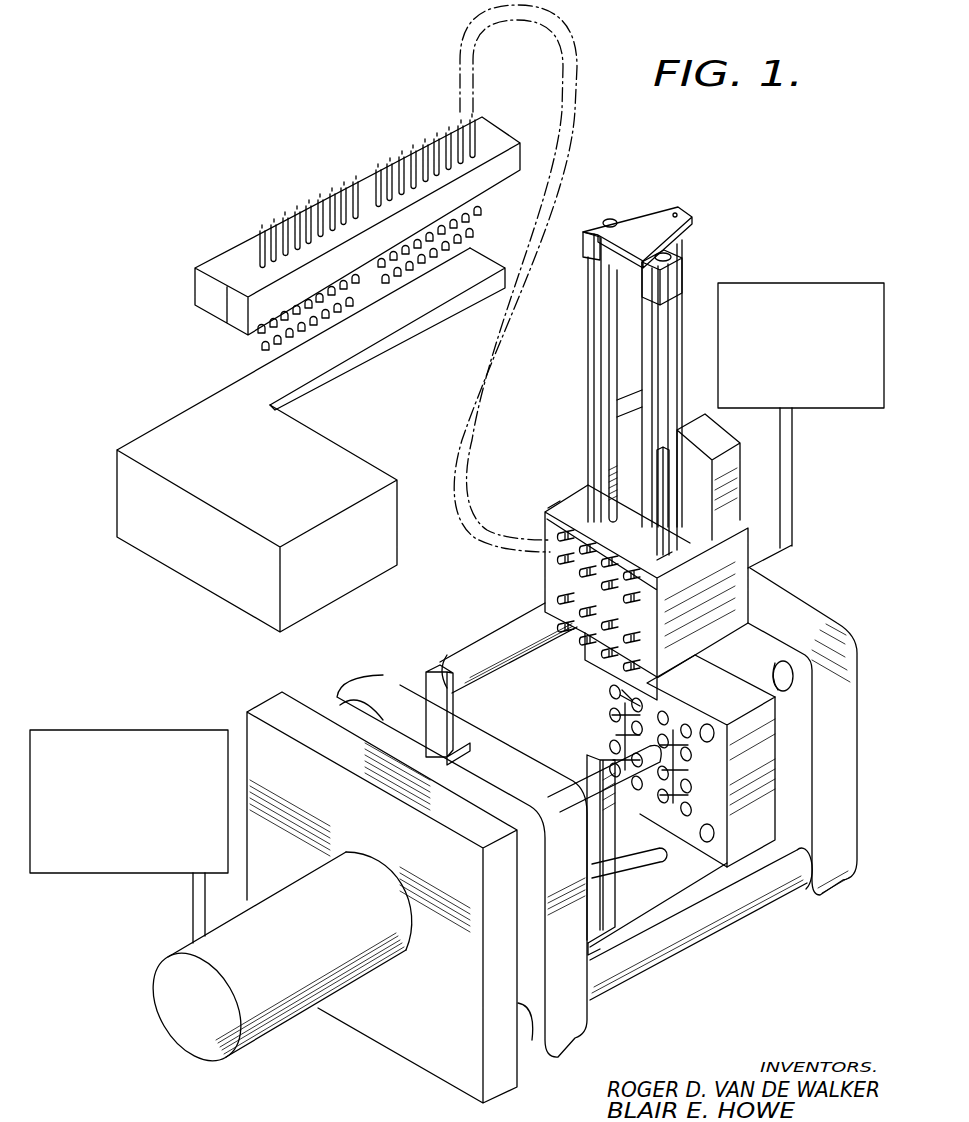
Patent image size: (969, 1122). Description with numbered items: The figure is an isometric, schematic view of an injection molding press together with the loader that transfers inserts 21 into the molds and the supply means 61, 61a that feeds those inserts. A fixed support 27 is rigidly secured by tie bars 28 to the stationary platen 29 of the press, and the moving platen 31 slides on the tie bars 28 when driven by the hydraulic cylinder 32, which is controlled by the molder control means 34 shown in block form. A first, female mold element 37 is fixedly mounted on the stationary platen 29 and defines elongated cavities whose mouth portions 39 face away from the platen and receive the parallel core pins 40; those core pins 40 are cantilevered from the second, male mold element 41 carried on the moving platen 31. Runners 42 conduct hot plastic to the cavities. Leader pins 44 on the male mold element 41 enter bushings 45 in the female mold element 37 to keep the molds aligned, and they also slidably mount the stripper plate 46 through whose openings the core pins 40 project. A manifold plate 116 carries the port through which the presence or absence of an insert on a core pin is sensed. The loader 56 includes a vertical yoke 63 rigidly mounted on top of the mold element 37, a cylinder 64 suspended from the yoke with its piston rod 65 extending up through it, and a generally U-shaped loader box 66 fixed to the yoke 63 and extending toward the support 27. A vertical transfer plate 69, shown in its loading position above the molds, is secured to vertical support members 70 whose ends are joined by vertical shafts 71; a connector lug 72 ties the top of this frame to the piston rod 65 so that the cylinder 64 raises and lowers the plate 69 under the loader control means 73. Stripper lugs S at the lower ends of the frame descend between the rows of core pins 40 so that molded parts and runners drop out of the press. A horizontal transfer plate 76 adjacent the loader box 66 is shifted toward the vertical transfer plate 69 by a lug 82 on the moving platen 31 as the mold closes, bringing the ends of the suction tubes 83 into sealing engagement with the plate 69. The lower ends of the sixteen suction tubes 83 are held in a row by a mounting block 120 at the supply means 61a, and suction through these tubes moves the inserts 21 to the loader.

The inserts 21 is at (260, 348).
The fixed support 27 is at (443, 1070).
The tie bars 28 is at (503, 634).
The stationary platen 29 is at (838, 885).
The moving platen 31 is at (558, 1040).
The hydraulic cylinder 32 is at (283, 1024).
The molder control means 34 is at (190, 730).
The first (female) mold element 37 is at (760, 822).
The mouth portions 39 is at (663, 803).
The core elements (core pins) 40 is at (623, 717).
The second (male) mold element 41 is at (590, 935).
The runners 42 is at (678, 773).
The leader pins 44 is at (632, 880).
The bushings 45 is at (705, 841).
The stripper plate 46 is at (613, 928).
The loader means 56 is at (576, 479).
The supply means 61 is at (162, 568).
The supply means 61a is at (228, 221).
The vertical yoke 63 is at (738, 468).
The cylinder 64 is at (680, 547).
The piston rod 65 is at (682, 290).
The loader box 66 is at (545, 571).
The vertical transfer plate 69 is at (658, 565).
The vertical support members 70 is at (593, 337).
The vertical shafts 71 is at (608, 288).
The connector lug 72 is at (648, 222).
The loader control means 73 is at (862, 282).
The horizontal transfer plate 76 is at (565, 505).
The lug 82 is at (447, 670).
The suction tubes (conduits) 83 is at (262, 252).
The manifold plate 116 is at (775, 752).
The mounting block 120 is at (235, 312).
The stripper lugs (ears) S is at (605, 690).